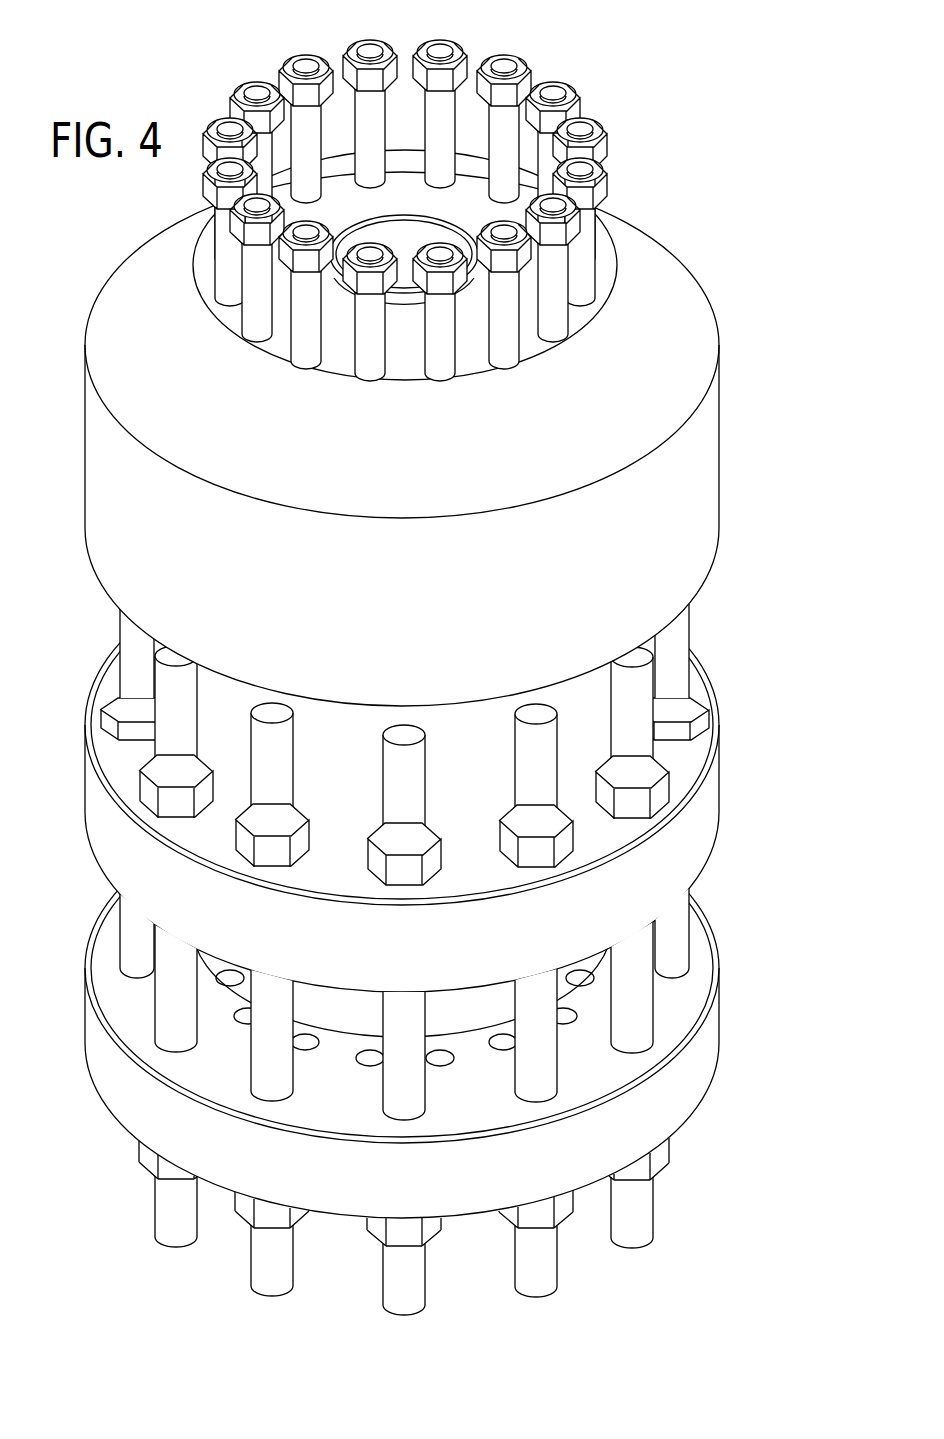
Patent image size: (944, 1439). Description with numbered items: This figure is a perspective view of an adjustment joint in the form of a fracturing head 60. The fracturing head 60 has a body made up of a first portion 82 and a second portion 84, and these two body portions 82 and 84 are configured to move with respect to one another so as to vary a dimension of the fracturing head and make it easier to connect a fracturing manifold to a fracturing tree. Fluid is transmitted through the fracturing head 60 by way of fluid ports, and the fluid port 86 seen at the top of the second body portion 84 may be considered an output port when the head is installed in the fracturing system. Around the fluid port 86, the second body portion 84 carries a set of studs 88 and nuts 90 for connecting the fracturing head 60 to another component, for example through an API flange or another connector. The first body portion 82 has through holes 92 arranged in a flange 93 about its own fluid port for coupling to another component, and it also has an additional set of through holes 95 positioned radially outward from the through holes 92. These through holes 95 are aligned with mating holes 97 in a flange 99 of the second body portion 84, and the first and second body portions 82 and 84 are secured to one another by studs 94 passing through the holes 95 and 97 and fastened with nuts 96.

The fracturing head 60 is at (405, 658).
The first portion 82 is at (415, 1005).
The second portion 84 is at (100, 512).
The fluid port 86 is at (403, 168).
The studs 88 is at (563, 305).
The nuts 90 is at (527, 80).
The through holes 92 is at (440, 1062).
The flange 93 is at (115, 1088).
The studs 94 is at (258, 1240).
The through holes 95 is at (560, 1088).
The nuts 96 is at (370, 1225).
The mating holes 97 is at (556, 876).
The flange 99 is at (112, 836).